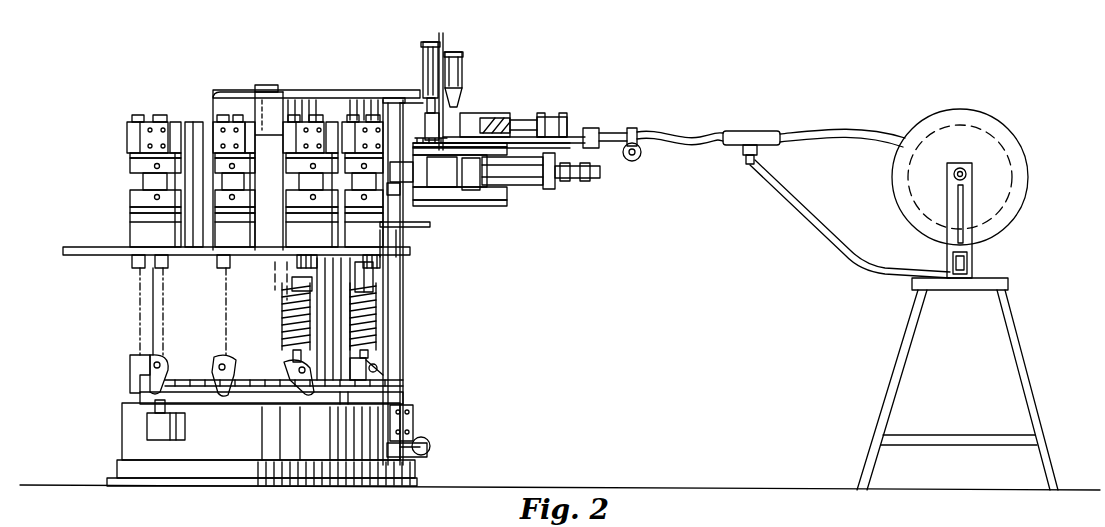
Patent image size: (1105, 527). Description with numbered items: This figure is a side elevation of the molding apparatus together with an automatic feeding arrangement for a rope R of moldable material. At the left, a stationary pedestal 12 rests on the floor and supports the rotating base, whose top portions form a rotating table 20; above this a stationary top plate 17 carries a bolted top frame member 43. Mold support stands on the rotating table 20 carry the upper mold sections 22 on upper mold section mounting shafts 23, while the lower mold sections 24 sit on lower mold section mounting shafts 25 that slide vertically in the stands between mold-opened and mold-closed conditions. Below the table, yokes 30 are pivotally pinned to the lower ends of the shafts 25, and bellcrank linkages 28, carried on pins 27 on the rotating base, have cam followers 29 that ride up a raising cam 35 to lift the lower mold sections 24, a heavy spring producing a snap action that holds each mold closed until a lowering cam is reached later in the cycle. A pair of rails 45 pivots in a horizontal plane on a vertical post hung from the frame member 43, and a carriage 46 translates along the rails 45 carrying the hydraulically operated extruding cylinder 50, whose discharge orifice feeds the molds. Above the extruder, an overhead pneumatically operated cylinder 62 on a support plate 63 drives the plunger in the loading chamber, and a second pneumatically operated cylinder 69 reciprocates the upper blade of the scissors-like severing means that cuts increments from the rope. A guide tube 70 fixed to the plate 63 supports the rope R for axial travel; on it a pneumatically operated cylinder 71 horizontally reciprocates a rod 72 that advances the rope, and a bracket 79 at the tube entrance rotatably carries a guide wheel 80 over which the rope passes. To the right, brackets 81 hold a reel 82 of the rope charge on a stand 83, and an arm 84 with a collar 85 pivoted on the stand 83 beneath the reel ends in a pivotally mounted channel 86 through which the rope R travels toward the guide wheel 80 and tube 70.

The stationary pedestal 12 is at (122, 467).
The stationary top plate 17 is at (223, 93).
The rotating table 20 is at (88, 247).
The upper mold sections 22 is at (137, 168).
The upper mold section mounting shafts 23 is at (163, 115).
The lower mold sections 24 is at (137, 193).
The lower mold section mounting shafts 25 is at (225, 263).
The pins 27 is at (213, 362).
The bellcrank linkages 28 is at (257, 347).
The cam followers 29 is at (308, 393).
The yokes 30 is at (290, 298).
The raising cam 35 is at (383, 372).
The top frame member 43 is at (327, 88).
The rails 45 is at (453, 153).
The carriage 46 is at (477, 197).
The extruding cylinder 50 is at (533, 187).
The pneumatically operated cylinder 62 is at (422, 55).
The support plate 63 is at (441, 33).
The pneumatically operated cylinder 69 is at (460, 63).
The guide tube 70 is at (567, 147).
The pneumatically operated cylinder 71 is at (553, 115).
The rod 72 is at (490, 113).
The bracket 79 is at (613, 125).
The guide wheel 80 is at (640, 160).
The brackets 81 is at (975, 180).
The reel 82 is at (1000, 132).
The stand 83 is at (900, 342).
The arm 84 is at (812, 213).
The collar 85 is at (967, 262).
The channel 86 is at (763, 131).
The rope R is at (830, 136).